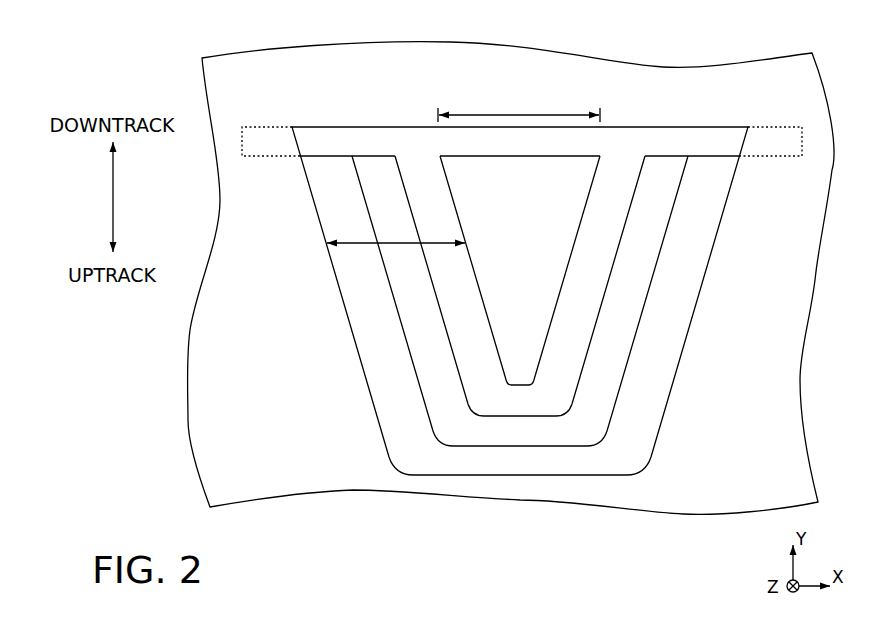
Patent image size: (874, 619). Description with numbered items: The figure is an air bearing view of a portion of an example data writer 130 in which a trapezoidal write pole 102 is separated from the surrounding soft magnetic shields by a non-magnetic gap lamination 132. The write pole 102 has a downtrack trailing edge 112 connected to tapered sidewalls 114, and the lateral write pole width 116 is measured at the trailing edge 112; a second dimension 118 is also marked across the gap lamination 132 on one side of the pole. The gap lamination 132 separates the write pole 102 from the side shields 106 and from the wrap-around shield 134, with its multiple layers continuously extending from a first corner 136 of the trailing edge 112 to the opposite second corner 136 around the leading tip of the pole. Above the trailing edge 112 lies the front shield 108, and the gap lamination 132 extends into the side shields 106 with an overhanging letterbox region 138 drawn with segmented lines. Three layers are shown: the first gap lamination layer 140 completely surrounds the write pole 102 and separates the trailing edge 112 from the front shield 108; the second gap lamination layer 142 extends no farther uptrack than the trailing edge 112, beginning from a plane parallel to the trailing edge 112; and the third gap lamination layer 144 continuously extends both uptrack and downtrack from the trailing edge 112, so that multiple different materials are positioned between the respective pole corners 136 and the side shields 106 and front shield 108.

The write pole 102 is at (520, 270).
The side shield 106 is at (217, 493).
The front shield 108 is at (217, 82).
The trailing edge 112 is at (513, 159).
The sidewall 114 is at (579, 217).
The write pole width 116 is at (519, 106).
The side gap width 118 is at (446, 247).
The data writer 130 is at (756, 37).
The non-magnetic gap lamination 132 is at (306, 203).
The wrap-around shield 134 is at (625, 491).
The corner 136 is at (424, 148).
The overhanging letterbox region 138 is at (784, 167).
The first gap lamination layer 140 is at (503, 412).
The second gap lamination layer 142 is at (503, 440).
The third gap lamination layer 144 is at (503, 470).